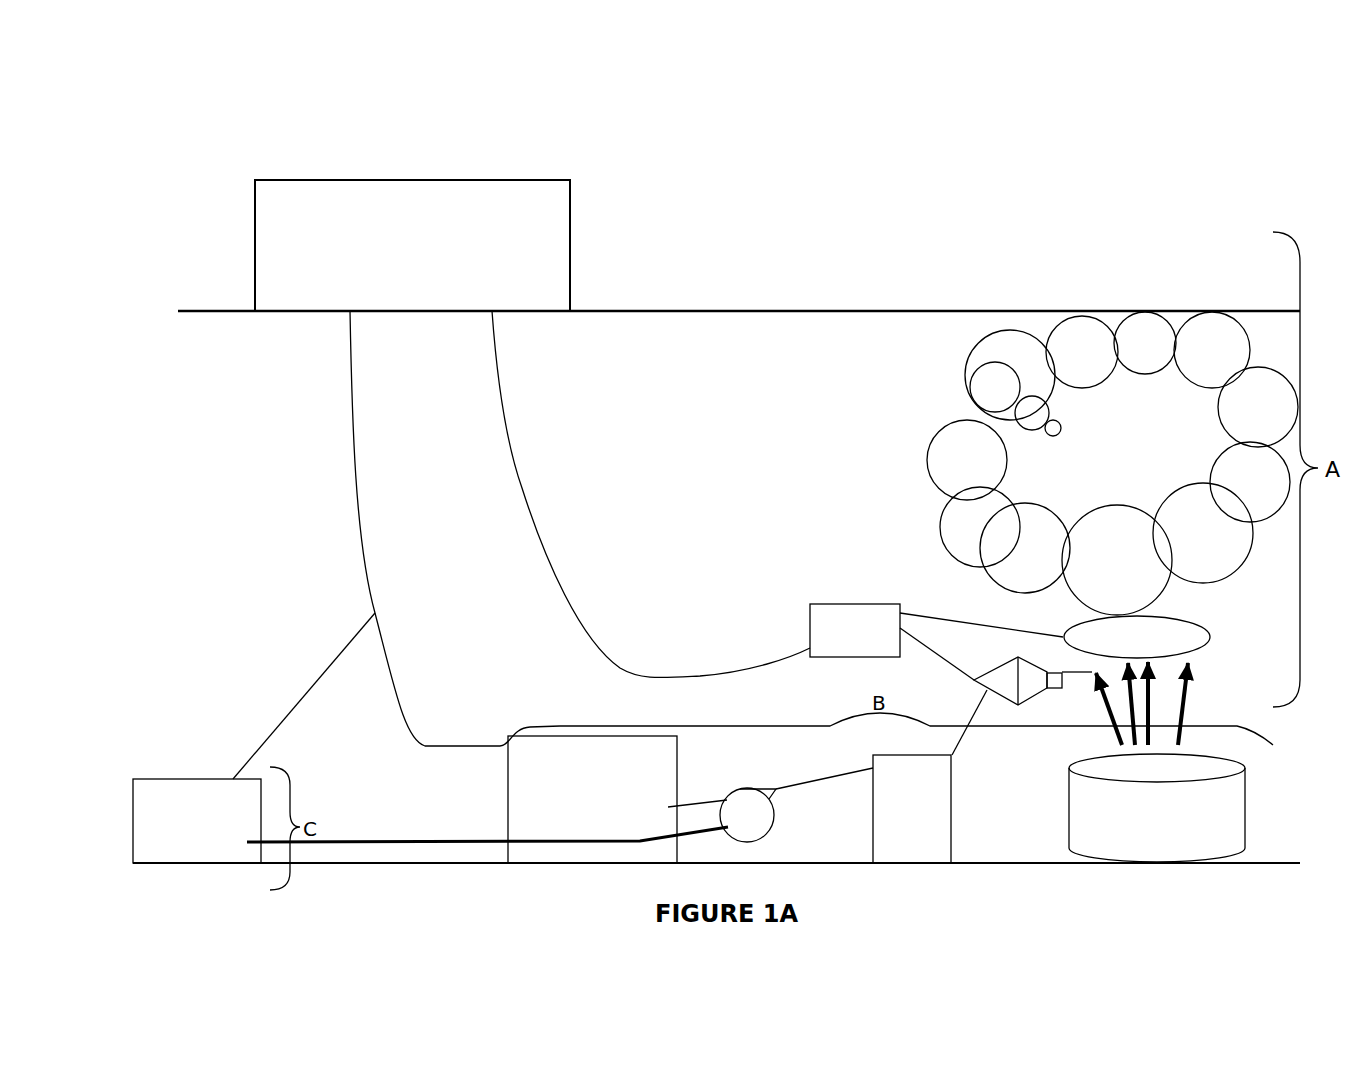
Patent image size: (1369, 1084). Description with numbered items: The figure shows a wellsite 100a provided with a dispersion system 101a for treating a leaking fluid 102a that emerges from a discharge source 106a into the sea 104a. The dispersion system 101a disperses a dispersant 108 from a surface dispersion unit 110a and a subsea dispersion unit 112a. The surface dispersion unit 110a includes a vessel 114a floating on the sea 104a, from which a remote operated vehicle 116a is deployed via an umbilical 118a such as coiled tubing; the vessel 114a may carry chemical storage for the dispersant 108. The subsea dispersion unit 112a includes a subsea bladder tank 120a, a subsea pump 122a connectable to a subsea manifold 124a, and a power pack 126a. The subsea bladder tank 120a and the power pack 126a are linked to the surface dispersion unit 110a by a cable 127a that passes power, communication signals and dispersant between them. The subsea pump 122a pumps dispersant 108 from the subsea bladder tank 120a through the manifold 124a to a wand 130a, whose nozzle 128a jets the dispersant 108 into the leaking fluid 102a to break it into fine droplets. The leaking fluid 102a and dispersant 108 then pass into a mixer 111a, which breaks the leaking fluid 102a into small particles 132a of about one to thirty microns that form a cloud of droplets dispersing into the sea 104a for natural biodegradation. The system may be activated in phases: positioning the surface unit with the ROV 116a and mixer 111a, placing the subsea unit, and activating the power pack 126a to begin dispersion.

The wellsite 100a is at (883, 180).
The dispersion system 101a is at (1036, 230).
The leaking fluid 102a is at (1167, 716).
The sea 104a is at (212, 387).
The discharge source 106a is at (1245, 808).
The dispersant 108 is at (1077, 672).
The surface dispersion unit 110a is at (135, 208).
The mixer 111a is at (1207, 633).
The subsea dispersion unit 112a is at (150, 583).
The vessel 114a is at (255, 205).
The remote operated vehicle 116a is at (827, 604).
The umbilical 118a is at (522, 488).
The subsea bladder tank 120a is at (508, 800).
The subsea pump 122a is at (772, 818).
The subsea manifold 124a is at (951, 838).
The power pack 126a is at (145, 779).
The cable 127a is at (358, 478).
The nozzle 128a is at (1058, 670).
The wand 130a is at (1005, 668).
The particles 132a is at (958, 395).